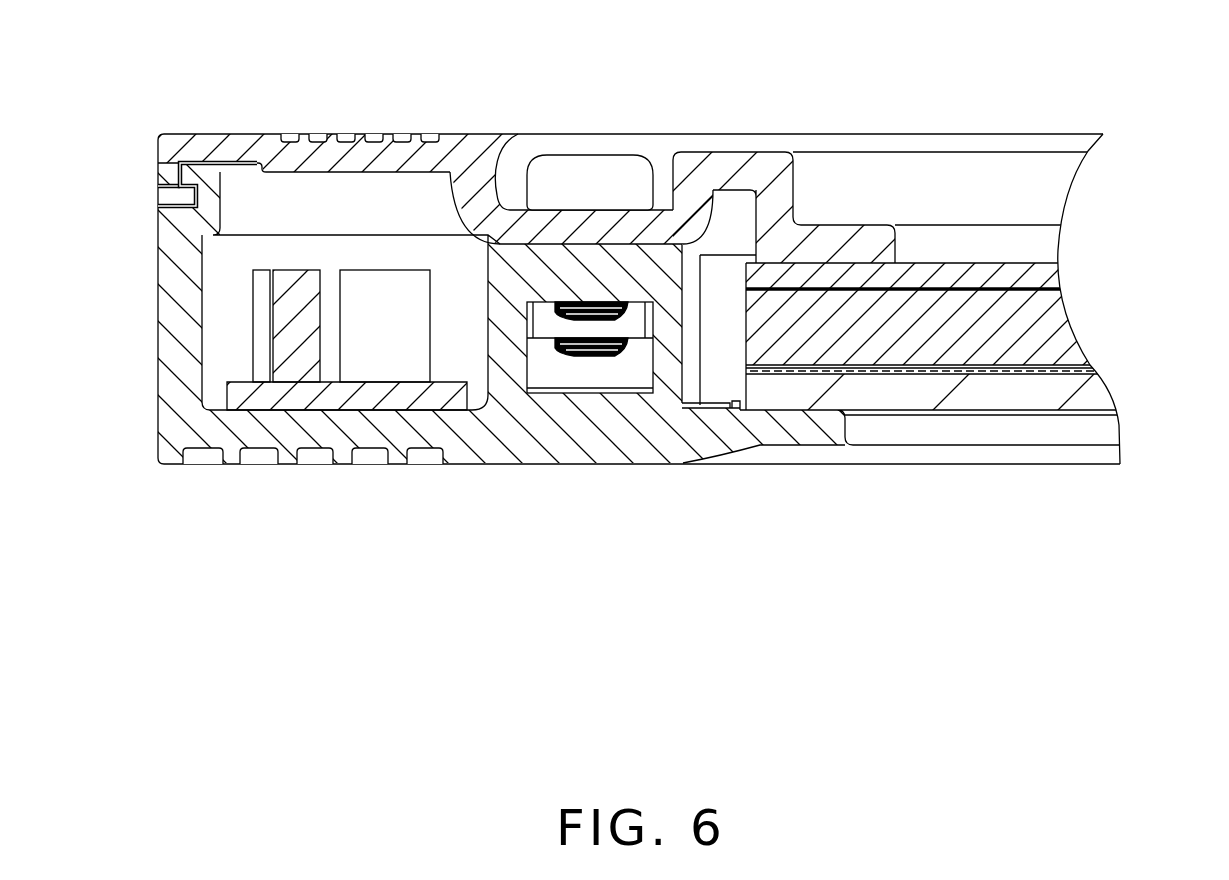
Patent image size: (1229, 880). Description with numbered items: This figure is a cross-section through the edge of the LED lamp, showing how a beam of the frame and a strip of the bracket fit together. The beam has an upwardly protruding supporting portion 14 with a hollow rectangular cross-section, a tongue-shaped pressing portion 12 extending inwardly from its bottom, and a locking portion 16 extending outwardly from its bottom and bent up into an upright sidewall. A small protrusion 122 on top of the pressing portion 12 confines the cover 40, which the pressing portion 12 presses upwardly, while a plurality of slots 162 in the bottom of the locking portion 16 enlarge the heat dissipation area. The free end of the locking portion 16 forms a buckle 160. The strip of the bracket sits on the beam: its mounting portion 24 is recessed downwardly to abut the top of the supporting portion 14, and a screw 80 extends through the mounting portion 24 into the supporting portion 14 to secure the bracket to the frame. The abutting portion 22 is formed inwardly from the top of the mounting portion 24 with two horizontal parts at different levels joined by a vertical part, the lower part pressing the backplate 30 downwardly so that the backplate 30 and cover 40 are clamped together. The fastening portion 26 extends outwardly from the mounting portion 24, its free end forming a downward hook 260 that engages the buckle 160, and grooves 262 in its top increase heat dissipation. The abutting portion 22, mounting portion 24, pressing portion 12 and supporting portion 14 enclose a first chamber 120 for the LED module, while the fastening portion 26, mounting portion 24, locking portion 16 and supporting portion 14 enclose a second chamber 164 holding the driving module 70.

The pressing portion 12 is at (797, 430).
The supporting portion 14 is at (584, 420).
The locking portion 16 is at (265, 443).
The abutting portion 22 is at (746, 183).
The mounting portion 24 is at (483, 200).
The fastening portion 26 is at (247, 153).
The backplate 30 is at (1042, 275).
The cover 40 is at (1090, 393).
The driving module 70 is at (392, 345).
The screw 80 is at (585, 180).
The first chamber 120 is at (722, 382).
The protrusion 122 is at (736, 410).
The buckle 160 is at (208, 198).
The slots 162 is at (318, 455).
The second chamber 164 is at (232, 350).
The hook 260 is at (185, 200).
The grooves 262 is at (320, 137).